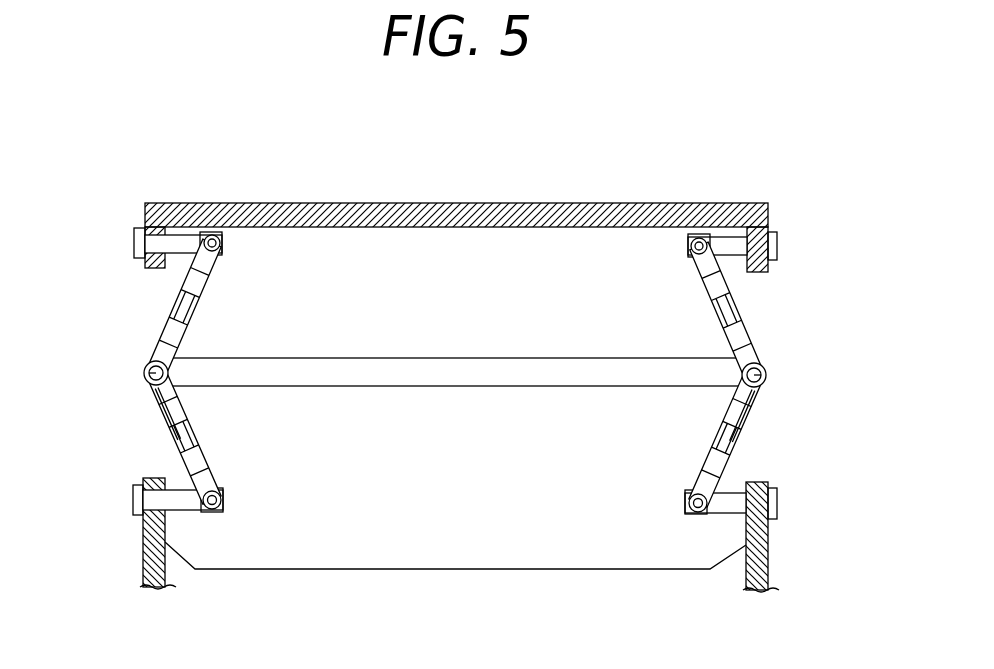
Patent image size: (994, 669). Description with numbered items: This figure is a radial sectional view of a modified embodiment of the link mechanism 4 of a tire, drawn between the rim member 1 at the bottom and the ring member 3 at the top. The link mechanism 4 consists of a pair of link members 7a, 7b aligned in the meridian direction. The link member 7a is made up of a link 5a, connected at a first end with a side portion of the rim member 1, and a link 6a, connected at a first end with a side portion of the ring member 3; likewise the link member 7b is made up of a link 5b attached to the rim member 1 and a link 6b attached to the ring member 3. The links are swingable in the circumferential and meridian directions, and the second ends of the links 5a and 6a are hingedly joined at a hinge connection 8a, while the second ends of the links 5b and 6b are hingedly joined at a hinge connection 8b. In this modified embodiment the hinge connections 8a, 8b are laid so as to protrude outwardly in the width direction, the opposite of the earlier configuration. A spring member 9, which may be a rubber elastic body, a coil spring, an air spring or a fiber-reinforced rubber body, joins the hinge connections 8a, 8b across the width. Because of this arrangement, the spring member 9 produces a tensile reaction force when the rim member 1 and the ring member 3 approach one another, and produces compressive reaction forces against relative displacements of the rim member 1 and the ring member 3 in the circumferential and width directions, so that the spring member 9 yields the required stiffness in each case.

The rim member 1 is at (140, 573).
The ring member 3 is at (142, 205).
The link mechanism 4 is at (188, 372).
The link 5a is at (727, 443).
The link 5b is at (192, 458).
The link 6a is at (706, 262).
The link 6b is at (195, 310).
The link member 7a is at (757, 330).
The link member 7b is at (155, 405).
The hinge connection 8a is at (766, 378).
The hinge connection 8b is at (150, 373).
The spring member 9 is at (442, 357).